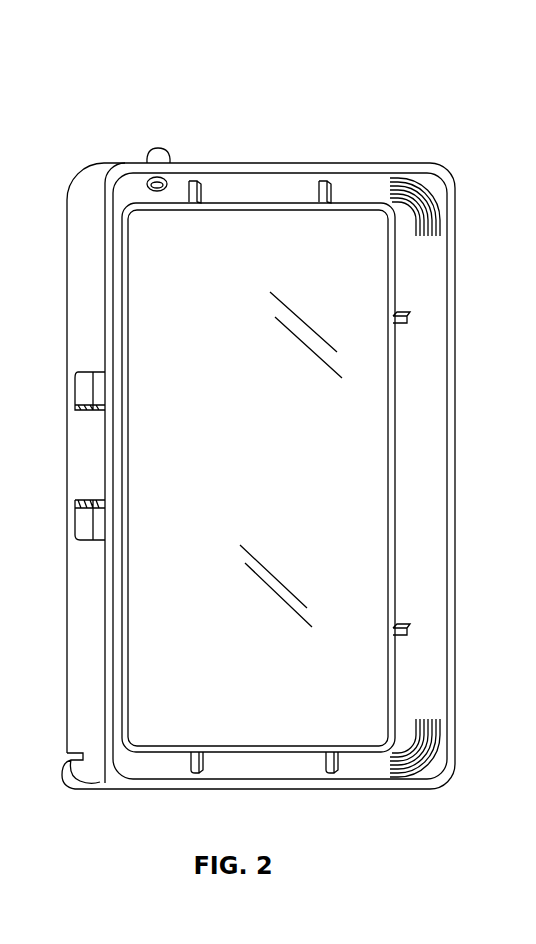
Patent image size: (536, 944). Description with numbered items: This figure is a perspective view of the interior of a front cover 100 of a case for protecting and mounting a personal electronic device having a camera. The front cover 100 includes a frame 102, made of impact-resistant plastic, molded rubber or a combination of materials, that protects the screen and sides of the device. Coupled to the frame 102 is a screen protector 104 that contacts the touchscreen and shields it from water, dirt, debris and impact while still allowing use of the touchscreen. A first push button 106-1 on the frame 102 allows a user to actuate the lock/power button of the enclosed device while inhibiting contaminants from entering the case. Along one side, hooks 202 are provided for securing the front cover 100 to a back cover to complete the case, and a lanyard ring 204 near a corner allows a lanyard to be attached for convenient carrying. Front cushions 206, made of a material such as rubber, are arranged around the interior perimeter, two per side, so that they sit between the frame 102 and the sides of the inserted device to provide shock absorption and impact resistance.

The front cover 100 is at (264, 423).
The frame 102 is at (408, 288).
The screen protector 104 is at (353, 383).
The first push button 106-1 is at (157, 148).
The hooks 202 is at (73, 390).
The lanyard ring 204 is at (55, 772).
The front cushions 206 is at (335, 737).